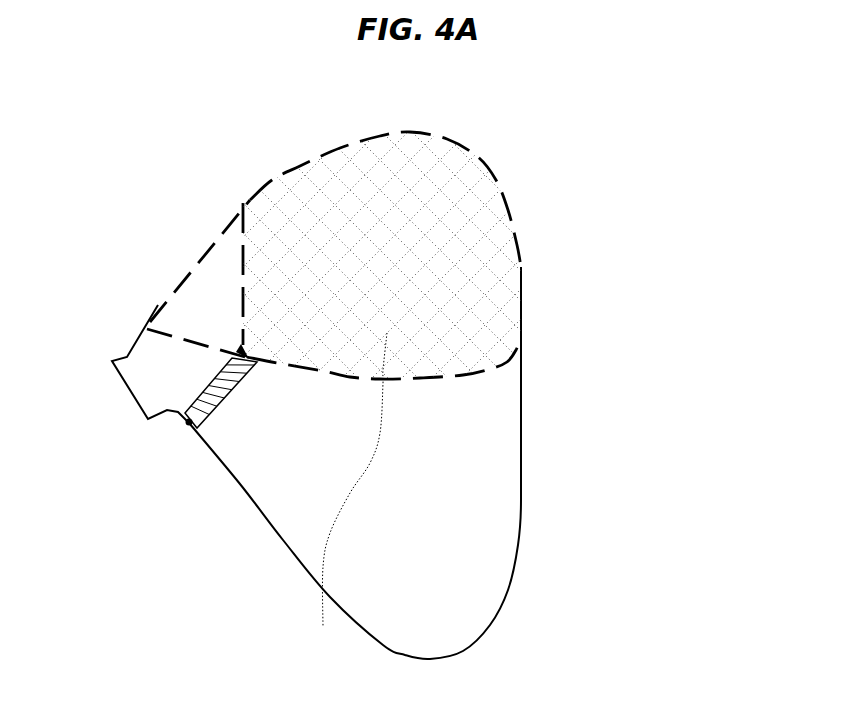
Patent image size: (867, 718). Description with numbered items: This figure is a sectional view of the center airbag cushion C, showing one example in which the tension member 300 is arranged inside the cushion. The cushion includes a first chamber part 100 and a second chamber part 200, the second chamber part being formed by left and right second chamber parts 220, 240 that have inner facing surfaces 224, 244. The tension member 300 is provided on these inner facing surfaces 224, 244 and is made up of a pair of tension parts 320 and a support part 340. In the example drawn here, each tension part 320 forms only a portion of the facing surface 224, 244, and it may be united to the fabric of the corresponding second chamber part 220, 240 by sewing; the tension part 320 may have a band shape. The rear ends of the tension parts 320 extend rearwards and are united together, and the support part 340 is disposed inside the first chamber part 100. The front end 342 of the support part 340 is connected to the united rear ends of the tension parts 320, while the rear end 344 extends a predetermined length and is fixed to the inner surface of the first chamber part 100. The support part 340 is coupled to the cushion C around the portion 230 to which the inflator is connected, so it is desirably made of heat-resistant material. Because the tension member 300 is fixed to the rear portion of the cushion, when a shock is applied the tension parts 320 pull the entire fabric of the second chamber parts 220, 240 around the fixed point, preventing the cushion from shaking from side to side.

The first chamber part 100 is at (550, 483).
The second chamber part 200 is at (406, 359).
The left second chamber part 220 is at (406, 359).
The right second chamber part 240 is at (532, 277).
The inner facing surface 224 is at (173, 233).
The inner facing surface 244 is at (243, 210).
The inflator connection portion 230 is at (130, 388).
The tension member 300 is at (234, 508).
The tension part 320 is at (340, 496).
The support part 340 is at (235, 410).
The front end of support part 342 is at (243, 353).
The rear end of support part 344 is at (188, 424).
The center airbag cushion C is at (505, 154).